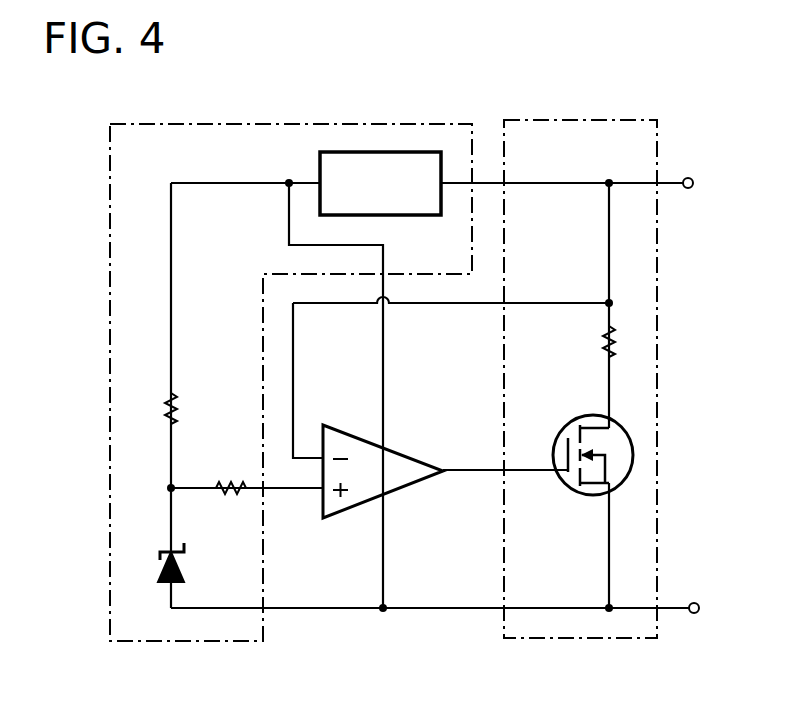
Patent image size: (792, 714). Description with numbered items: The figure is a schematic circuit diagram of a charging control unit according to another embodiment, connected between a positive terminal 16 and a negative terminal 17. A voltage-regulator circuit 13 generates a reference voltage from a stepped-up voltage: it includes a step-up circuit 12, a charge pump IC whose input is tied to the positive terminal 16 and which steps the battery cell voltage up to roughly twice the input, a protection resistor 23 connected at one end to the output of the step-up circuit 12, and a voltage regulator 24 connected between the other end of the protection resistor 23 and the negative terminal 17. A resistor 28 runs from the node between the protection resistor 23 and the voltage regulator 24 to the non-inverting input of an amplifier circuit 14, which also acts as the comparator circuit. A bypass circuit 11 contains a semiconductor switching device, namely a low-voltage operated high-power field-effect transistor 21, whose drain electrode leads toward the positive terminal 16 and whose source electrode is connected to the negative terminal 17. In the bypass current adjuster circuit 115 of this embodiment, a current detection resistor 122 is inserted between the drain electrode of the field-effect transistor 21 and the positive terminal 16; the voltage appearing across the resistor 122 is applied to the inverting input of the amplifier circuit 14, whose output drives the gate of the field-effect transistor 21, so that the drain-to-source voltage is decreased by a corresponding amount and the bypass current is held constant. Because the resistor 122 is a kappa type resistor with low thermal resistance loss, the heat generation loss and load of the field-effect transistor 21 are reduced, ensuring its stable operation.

The bypass circuit 11 is at (563, 508).
The step-up circuit 12 is at (419, 152).
The voltage-regulator circuit 13 is at (265, 630).
The amplifier circuit 14 is at (352, 513).
The positive terminal 16 is at (694, 183).
The negative terminal 17 is at (700, 608).
The field-effect transistor 21 is at (627, 502).
The protection resistor 23 is at (178, 400).
The voltage regulator 24 is at (190, 567).
The resistor 28 is at (226, 479).
The bypass current adjuster circuit 115 is at (660, 542).
The current detection resistor 122 is at (616, 342).